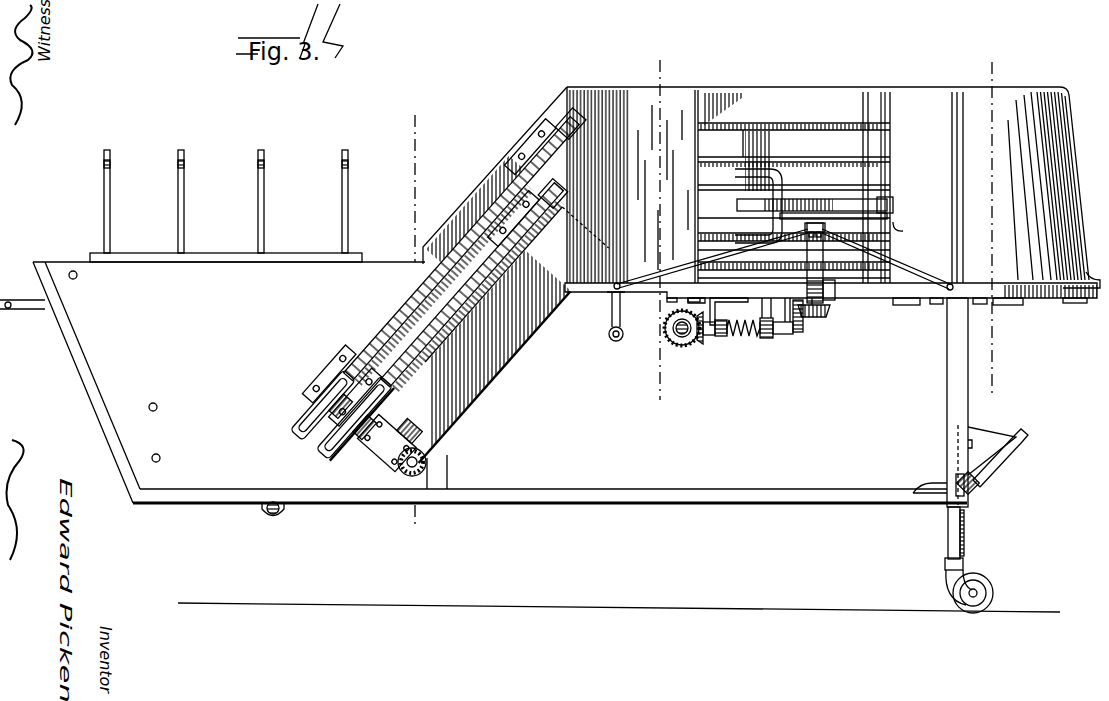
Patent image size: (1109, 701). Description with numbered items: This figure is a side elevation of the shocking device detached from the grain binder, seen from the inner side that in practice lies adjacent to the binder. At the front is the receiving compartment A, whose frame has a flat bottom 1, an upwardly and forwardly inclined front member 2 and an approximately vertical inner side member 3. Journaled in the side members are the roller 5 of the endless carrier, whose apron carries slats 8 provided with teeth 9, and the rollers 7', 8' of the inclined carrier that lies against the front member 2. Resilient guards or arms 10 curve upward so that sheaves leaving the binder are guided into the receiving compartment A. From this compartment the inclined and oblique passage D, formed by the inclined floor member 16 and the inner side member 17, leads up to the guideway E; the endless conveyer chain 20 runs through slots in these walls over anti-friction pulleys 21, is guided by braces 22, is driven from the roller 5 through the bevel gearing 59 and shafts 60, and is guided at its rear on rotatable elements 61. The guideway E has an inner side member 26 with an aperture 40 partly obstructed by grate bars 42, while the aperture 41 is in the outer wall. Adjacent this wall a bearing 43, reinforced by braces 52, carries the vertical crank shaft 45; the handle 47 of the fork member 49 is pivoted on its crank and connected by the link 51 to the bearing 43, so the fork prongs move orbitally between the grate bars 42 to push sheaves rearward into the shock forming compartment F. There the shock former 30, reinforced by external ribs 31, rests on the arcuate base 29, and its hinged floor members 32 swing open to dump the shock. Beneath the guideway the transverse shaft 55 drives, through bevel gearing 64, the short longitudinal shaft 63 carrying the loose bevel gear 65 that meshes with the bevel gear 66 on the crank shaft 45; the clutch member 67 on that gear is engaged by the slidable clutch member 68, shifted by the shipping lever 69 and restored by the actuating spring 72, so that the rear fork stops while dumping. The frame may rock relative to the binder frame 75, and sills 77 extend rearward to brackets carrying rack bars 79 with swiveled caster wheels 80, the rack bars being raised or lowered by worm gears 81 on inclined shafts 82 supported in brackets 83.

The flat bottom 1 is at (183, 497).
The inclined front member 2 is at (106, 421).
The inner side member 3 is at (192, 410).
The roller 5 is at (428, 463).
The roller 7' is at (164, 406).
The roller 8' is at (88, 277).
The slats 8 is at (676, 218).
The teeth 9 is at (975, 40).
The guards or arms 10 is at (341, 205).
The inclined floor member 16 is at (521, 341).
The inner side member 17 is at (503, 167).
The endless conveyer chain 20 is at (399, 300).
The anti-friction pulleys 21 is at (421, 280).
The braces 22 is at (463, 330).
The inner side member 26 is at (828, 185).
The arcuate base 29 is at (1035, 299).
The shock former 30 is at (1046, 92).
The external ribs or braces 31 is at (952, 158).
The floor members 32 is at (1074, 302).
The aperture 40 is at (826, 104).
The aperture 41 is at (714, 145).
The grate bars 42 is at (797, 158).
The bearing 43 is at (825, 268).
The crank shaft 45 is at (815, 321).
The handle 47 is at (842, 200).
The fork member 49 is at (778, 176).
The link 51 is at (881, 225).
The braces 52 is at (672, 261).
The shaft 55 is at (665, 331).
The bevel gearing 59 is at (401, 470).
The shafts 60 is at (322, 373).
The elements 61 is at (561, 122).
The short longitudinal shaft 63 is at (738, 337).
The bevel gearing 64 is at (683, 348).
The loose bevel gear 65 is at (803, 323).
The bevel gear 66 is at (832, 312).
The clutch member 67 is at (783, 336).
The slidable clutch member 68 is at (776, 341).
The shipping lever 69 is at (766, 339).
The actuating spring 72 is at (728, 339).
The frame 75 is at (275, 514).
The frame members or sills 77 is at (693, 504).
The rack bars 79 is at (947, 540).
The swiveled caster wheels 80 is at (955, 581).
The worm gears 81 is at (980, 478).
The inclined shafts 82 is at (1005, 460).
The brackets 83 is at (990, 431).
The receiving compartment A is at (229, 294).
The passage D is at (536, 272).
The guideway E is at (753, 106).
The shock forming compartment F is at (1030, 168).